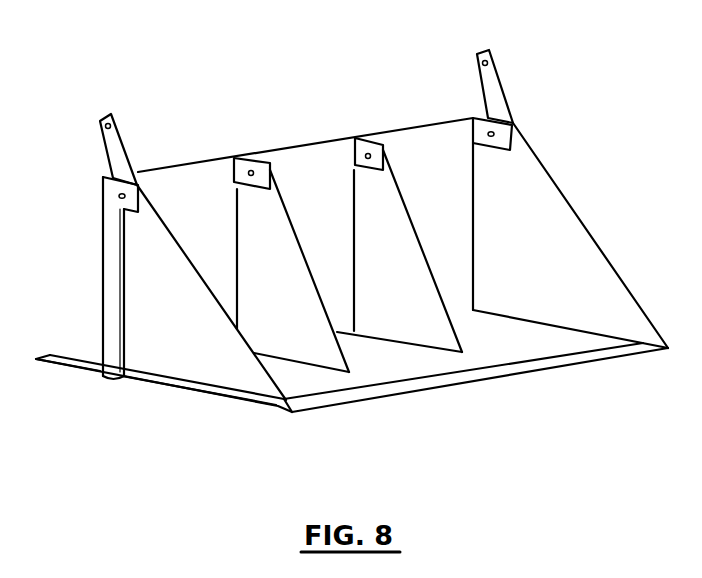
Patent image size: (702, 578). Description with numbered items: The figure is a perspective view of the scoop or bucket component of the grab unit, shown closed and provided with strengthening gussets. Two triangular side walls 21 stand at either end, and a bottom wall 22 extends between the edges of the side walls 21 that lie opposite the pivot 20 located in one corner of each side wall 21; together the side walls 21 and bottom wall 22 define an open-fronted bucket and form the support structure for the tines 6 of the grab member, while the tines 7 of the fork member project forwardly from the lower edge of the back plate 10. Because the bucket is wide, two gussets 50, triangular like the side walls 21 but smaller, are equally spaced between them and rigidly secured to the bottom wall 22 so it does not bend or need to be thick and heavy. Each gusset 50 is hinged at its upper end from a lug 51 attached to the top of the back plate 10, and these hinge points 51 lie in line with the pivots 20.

The tines 6 is at (67, 366).
The tines 7 is at (207, 394).
The back plate 10 is at (313, 168).
The pivot 20 is at (122, 196).
The side walls 21 is at (557, 228).
The bottom wall 22 is at (415, 378).
The gussets 50 is at (314, 342).
The lugs 51 is at (251, 173).